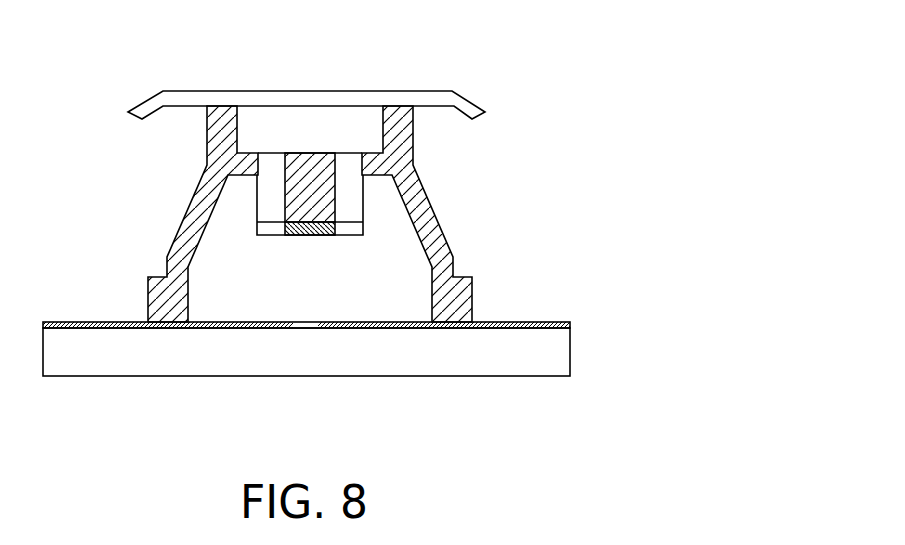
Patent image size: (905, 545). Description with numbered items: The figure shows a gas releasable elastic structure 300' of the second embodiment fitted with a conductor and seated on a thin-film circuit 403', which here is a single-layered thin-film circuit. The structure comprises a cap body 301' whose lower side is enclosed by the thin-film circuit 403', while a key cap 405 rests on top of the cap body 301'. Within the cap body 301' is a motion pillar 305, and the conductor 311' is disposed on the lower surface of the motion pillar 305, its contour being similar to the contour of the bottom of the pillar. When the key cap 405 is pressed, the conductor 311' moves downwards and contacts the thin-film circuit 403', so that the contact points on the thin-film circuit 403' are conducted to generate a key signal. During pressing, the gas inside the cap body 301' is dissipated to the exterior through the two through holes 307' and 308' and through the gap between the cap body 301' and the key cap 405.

The key cap 405 is at (455, 98).
The cap body 301' is at (343, 214).
The motion pillar 305 is at (305, 160).
The conductor 311' is at (307, 330).
The through hole 307' is at (267, 136).
The through hole 308' is at (356, 135).
The gas releasable elastic structure 300' is at (559, 229).
The thin-film circuit 403' is at (363, 343).